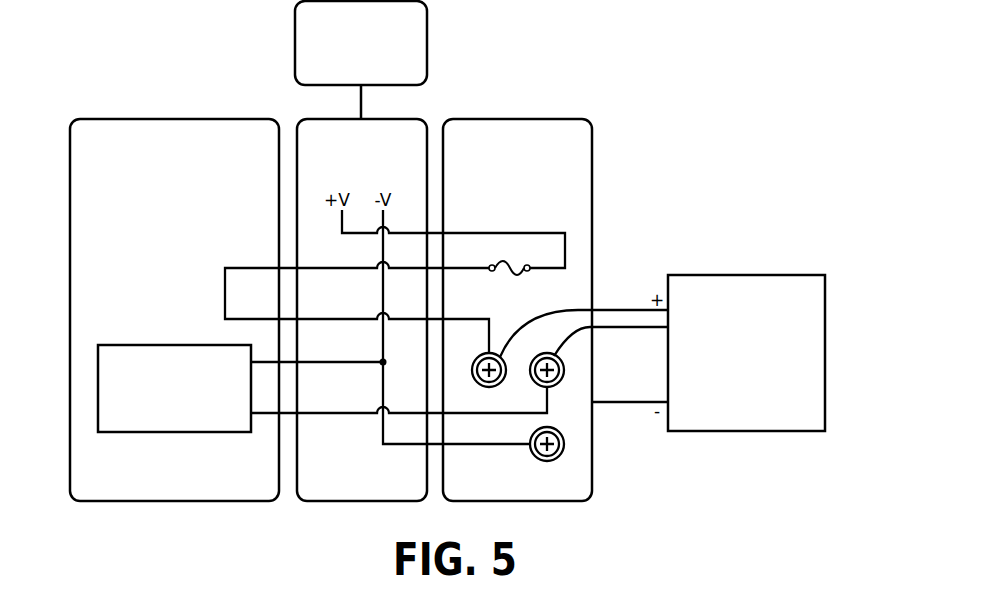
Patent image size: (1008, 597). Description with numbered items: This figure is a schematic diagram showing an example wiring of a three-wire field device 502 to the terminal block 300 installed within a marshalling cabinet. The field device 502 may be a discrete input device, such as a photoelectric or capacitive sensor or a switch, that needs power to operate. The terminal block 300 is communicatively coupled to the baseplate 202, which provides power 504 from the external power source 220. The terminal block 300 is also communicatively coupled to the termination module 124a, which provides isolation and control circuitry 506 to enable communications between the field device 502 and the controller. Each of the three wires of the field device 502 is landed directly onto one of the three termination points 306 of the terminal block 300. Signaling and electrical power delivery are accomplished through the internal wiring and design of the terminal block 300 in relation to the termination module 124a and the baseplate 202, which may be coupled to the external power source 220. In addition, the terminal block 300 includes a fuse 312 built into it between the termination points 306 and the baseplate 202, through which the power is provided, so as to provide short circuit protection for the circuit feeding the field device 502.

The termination module 124a is at (127, 118).
The baseplate 202 is at (307, 118).
The terminal block 300 is at (535, 118).
The external power source 220 is at (427, 46).
The power 504 is at (392, 183).
The fuse 312 is at (519, 258).
The isolation and control circuitry 506 is at (170, 345).
The termination points 306 is at (497, 382).
The 3-wire field device 502 is at (767, 275).